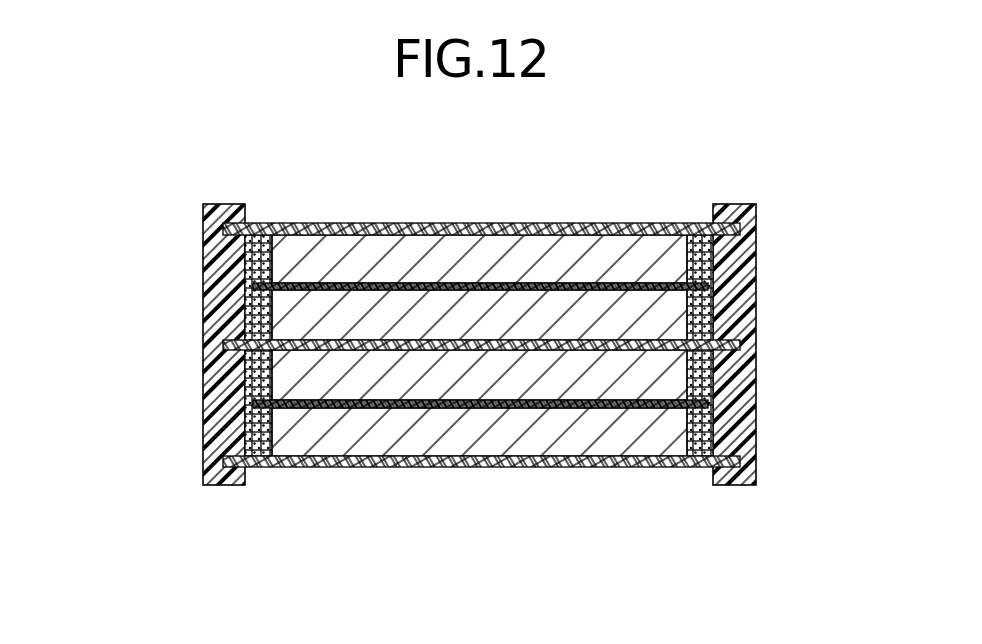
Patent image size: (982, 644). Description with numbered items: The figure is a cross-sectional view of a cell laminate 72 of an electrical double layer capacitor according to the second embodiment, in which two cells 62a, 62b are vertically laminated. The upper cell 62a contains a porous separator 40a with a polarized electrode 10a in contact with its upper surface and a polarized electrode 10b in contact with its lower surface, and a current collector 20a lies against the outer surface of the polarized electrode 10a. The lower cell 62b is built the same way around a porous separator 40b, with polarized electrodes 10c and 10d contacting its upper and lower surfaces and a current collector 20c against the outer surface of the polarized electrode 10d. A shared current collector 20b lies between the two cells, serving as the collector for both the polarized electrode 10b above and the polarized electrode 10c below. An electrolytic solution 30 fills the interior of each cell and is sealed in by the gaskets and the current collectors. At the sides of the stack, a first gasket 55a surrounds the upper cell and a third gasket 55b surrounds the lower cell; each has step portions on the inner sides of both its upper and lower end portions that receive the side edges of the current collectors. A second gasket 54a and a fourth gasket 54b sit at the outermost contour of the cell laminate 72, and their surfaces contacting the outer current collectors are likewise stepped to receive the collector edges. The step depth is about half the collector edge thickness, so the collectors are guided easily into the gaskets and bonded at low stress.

The cell laminate 72 is at (677, 145).
The polarized electrode 10a is at (421, 243).
The polarized electrode 10b is at (548, 322).
The polarized electrode 10c is at (409, 388).
The polarized electrode 10d is at (531, 440).
The current collector 20a is at (742, 230).
The current collector 20b is at (742, 345).
The current collector 20c is at (738, 465).
The electrolytic solution 30 is at (267, 242).
The porous separator 40a is at (718, 283).
The porous separator 40b is at (714, 404).
The second gasket 54a is at (715, 206).
The fourth gasket 54b is at (745, 486).
The first gasket 55a is at (747, 302).
The third gasket 55b is at (748, 425).
The cell 62a is at (195, 227).
The cell 62b is at (195, 353).